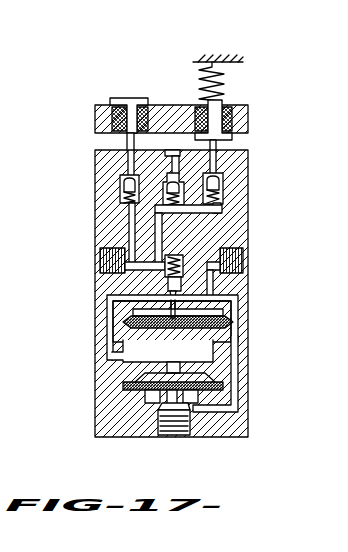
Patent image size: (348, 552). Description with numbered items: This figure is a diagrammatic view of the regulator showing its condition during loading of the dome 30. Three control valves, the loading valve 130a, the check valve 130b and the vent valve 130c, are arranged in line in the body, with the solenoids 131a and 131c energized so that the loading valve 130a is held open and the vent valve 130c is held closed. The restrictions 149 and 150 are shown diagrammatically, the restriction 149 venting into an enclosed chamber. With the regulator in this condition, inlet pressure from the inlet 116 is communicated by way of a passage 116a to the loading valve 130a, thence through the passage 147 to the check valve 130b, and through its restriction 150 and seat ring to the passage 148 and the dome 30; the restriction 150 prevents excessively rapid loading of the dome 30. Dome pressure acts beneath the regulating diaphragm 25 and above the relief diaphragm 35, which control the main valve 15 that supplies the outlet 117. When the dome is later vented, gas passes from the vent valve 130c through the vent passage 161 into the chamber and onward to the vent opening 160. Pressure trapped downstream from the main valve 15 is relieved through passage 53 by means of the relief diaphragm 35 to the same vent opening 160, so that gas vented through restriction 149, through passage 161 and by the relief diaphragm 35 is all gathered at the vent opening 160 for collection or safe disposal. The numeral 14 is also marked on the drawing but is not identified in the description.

The solenoid 131a is at (115, 95).
The solenoid 131c is at (233, 96).
The passage 147 is at (128, 139).
The restriction 150 is at (180, 157).
The restriction 149 is at (181, 156).
The vent passage 161 is at (243, 152).
The loading valve 130a is at (120, 181).
The check valve 130b is at (184, 212).
The vent valve 130c is at (224, 184).
The passage 116a is at (129, 212).
The inlet 116 is at (100, 265).
The outlet 117 is at (243, 258).
The passage 14 is at (180, 213).
The main valve 15 is at (173, 212).
The passage 148 is at (110, 322).
The regulating diaphragm 25 is at (237, 321).
The dome 30 is at (216, 351).
The passage 53 is at (237, 366).
The relief diaphragm 35 is at (224, 387).
The vent opening 160 is at (181, 432).